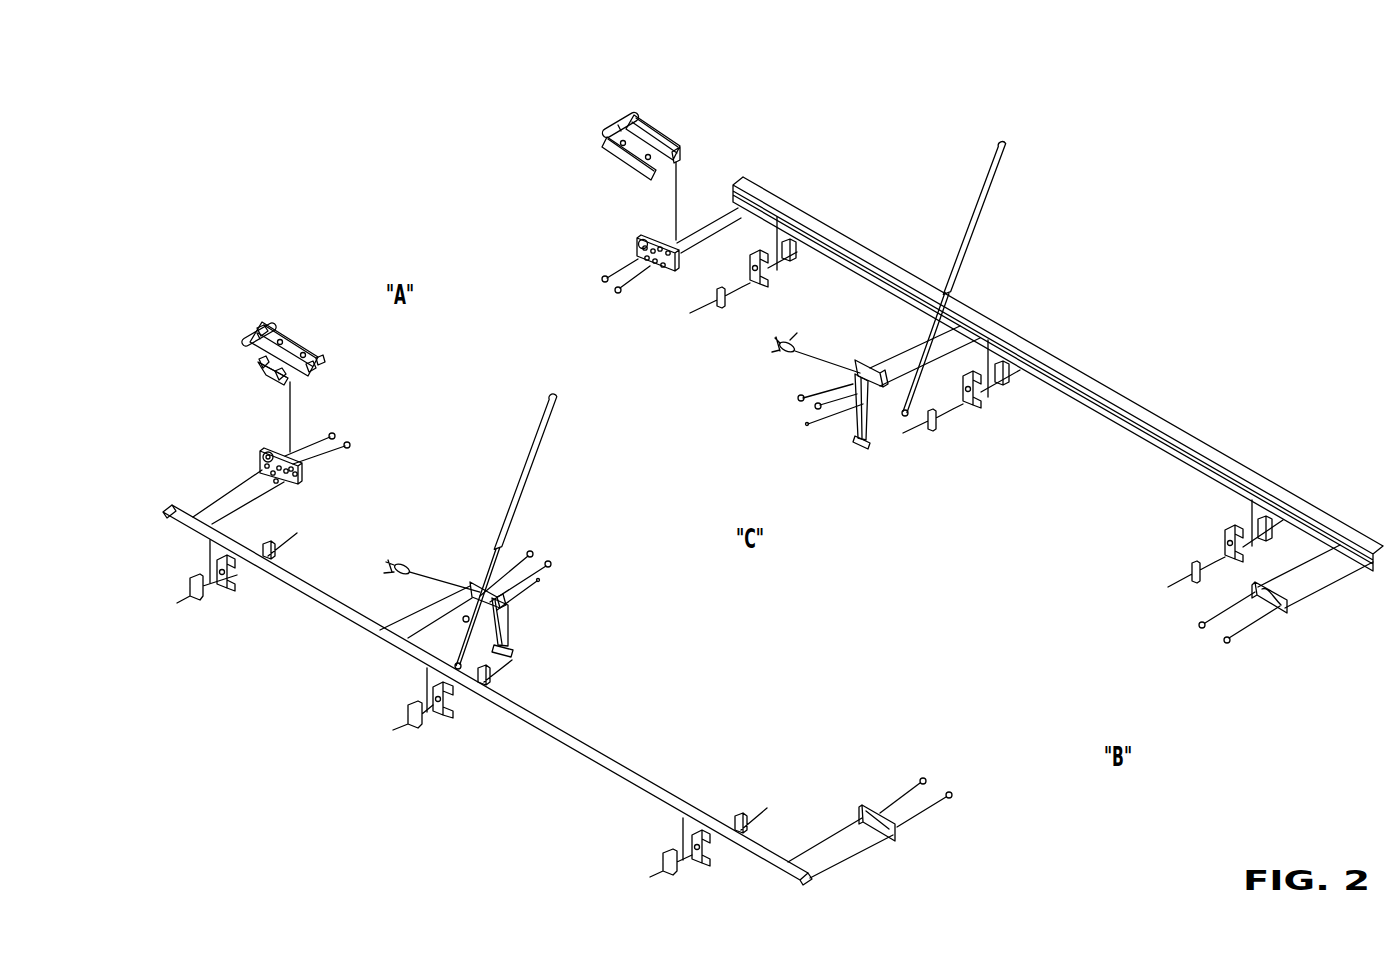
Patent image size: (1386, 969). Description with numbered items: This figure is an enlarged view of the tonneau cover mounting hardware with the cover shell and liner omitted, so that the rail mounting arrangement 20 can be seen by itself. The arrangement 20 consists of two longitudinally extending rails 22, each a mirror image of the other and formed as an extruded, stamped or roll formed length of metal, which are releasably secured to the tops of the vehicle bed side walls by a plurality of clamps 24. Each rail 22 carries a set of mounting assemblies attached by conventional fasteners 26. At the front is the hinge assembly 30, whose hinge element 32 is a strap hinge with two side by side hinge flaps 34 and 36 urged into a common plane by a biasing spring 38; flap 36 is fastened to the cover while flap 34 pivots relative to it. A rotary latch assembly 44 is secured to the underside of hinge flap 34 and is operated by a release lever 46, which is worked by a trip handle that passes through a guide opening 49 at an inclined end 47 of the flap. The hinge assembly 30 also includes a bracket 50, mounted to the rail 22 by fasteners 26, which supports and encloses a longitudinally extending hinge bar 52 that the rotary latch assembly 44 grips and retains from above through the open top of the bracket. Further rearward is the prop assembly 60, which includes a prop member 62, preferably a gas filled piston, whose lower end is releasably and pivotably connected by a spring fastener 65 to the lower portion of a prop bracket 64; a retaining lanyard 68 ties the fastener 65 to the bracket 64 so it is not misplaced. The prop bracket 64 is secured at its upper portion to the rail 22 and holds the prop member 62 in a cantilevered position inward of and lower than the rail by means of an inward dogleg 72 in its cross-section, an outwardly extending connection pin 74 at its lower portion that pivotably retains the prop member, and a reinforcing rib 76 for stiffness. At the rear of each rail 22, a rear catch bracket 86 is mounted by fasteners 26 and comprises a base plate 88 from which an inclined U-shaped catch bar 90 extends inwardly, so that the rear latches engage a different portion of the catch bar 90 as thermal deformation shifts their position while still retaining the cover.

The rail mounting arrangement 20 is at (1100, 312).
The rail 22 is at (610, 750).
The clamp 24 is at (220, 618).
The fastener 26 is at (352, 447).
The hinge assembly 30 is at (212, 380).
The hinge element 32 is at (648, 98).
The hinge flap 34 is at (660, 132).
The hinge flap 36 is at (630, 152).
The biasing spring 38 is at (245, 305).
The rotary latch assembly 44 is at (260, 361).
The release lever 46 is at (286, 380).
The inclined end 47 is at (326, 360).
The guide opening 49 is at (316, 372).
The bracket 50 is at (303, 480).
The hinge bar 52 is at (262, 452).
The prop assembly 60 is at (580, 520).
The prop member 62 is at (548, 460).
The prop bracket 64 is at (562, 608).
The spring fastener 65 is at (408, 560).
The retaining lanyard 68 is at (442, 575).
The dogleg 72 is at (528, 597).
The connection pin 74 is at (508, 645).
The reinforcing rib 76 is at (543, 625).
The rear catch bracket 86 is at (864, 780).
The base plate 88 is at (875, 832).
The catch bar 90 is at (950, 793).